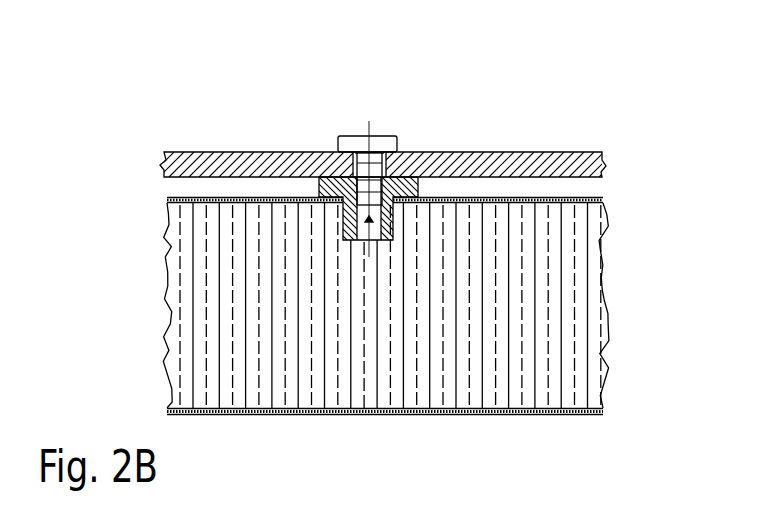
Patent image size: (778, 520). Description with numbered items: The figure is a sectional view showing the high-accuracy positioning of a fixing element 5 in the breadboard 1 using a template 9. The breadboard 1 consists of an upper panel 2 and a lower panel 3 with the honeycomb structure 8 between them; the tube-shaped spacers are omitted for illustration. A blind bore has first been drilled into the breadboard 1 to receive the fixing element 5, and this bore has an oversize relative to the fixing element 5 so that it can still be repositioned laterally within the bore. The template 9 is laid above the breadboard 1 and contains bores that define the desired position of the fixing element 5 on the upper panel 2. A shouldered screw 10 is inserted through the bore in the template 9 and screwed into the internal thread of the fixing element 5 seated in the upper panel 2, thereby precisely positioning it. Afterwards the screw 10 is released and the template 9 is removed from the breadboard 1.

The breadboard 1 is at (526, 99).
The upper panel 2 is at (603, 198).
The lower panel 3 is at (527, 414).
The fixing element 5 is at (423, 182).
The honeycomb structure 8 is at (198, 305).
The template 9 is at (223, 162).
The shouldered screw 10 is at (355, 143).